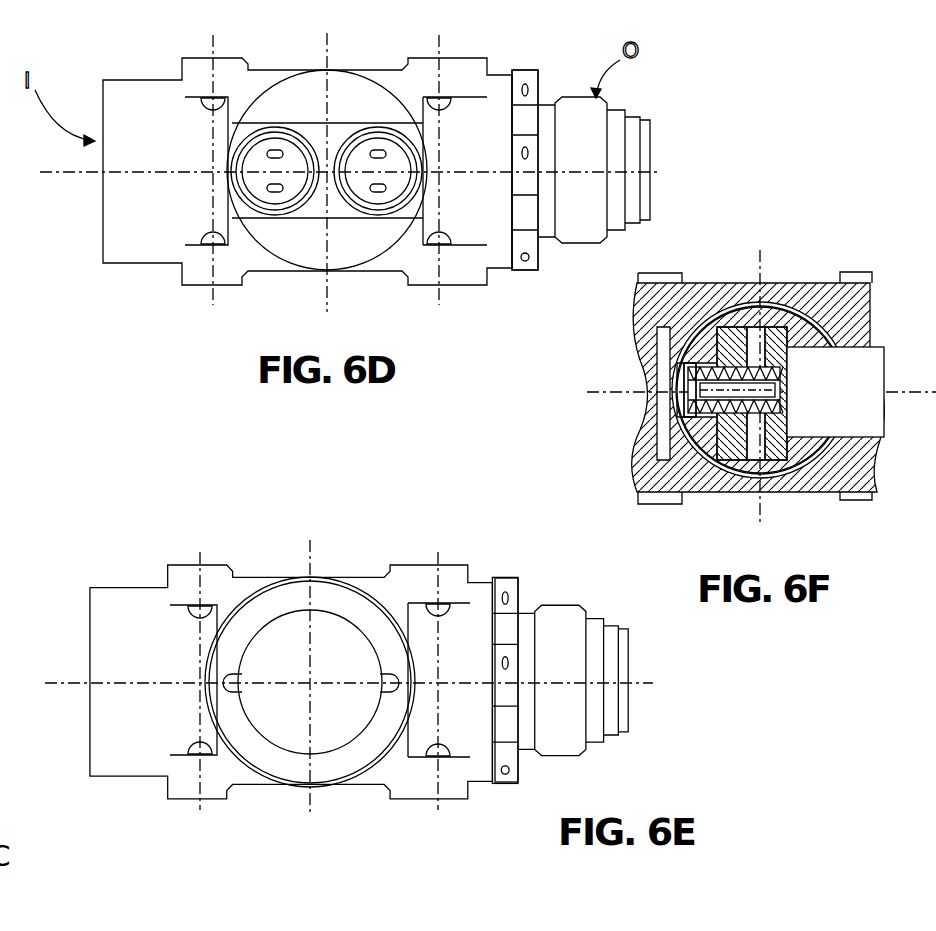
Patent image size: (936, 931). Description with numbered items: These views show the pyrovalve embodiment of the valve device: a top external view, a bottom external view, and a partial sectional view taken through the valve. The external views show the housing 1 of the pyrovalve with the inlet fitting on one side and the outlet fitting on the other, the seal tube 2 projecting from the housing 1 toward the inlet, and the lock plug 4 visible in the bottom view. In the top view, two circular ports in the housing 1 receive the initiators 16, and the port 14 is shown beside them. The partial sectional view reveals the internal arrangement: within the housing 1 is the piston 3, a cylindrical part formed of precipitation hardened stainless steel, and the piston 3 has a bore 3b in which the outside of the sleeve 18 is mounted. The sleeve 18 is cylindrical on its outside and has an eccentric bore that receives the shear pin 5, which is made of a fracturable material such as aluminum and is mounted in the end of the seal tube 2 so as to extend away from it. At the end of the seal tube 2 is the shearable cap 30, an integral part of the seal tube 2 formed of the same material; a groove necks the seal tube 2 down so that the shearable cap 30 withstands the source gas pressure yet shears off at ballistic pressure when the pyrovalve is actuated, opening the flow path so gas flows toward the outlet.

In FIG. 6D, the housing 1 is at (466, 57).
In FIG. 6E, the housing 1 is at (447, 565).
In FIG. 6F, the housing 1 is at (820, 283).
In FIG. 6D, the seal tube 2 is at (537, 70).
In FIG. 6E, the seal tube 2 is at (519, 578).
In FIG. 6F, the piston 3 is at (733, 460).
In FIG. 6F, the bore 3b is at (716, 357).
In FIG. 6E, the lock plug 4 is at (337, 768).
In FIG. 6F, the shear pin 5 is at (784, 380).
In FIG. 6D, the first port 14 is at (312, 214).
In FIG. 6D, the initiators 16 is at (390, 206).
In FIG. 6F, the sleeve 18 is at (690, 405).
In FIG. 6F, the shearable cap 30 is at (785, 453).